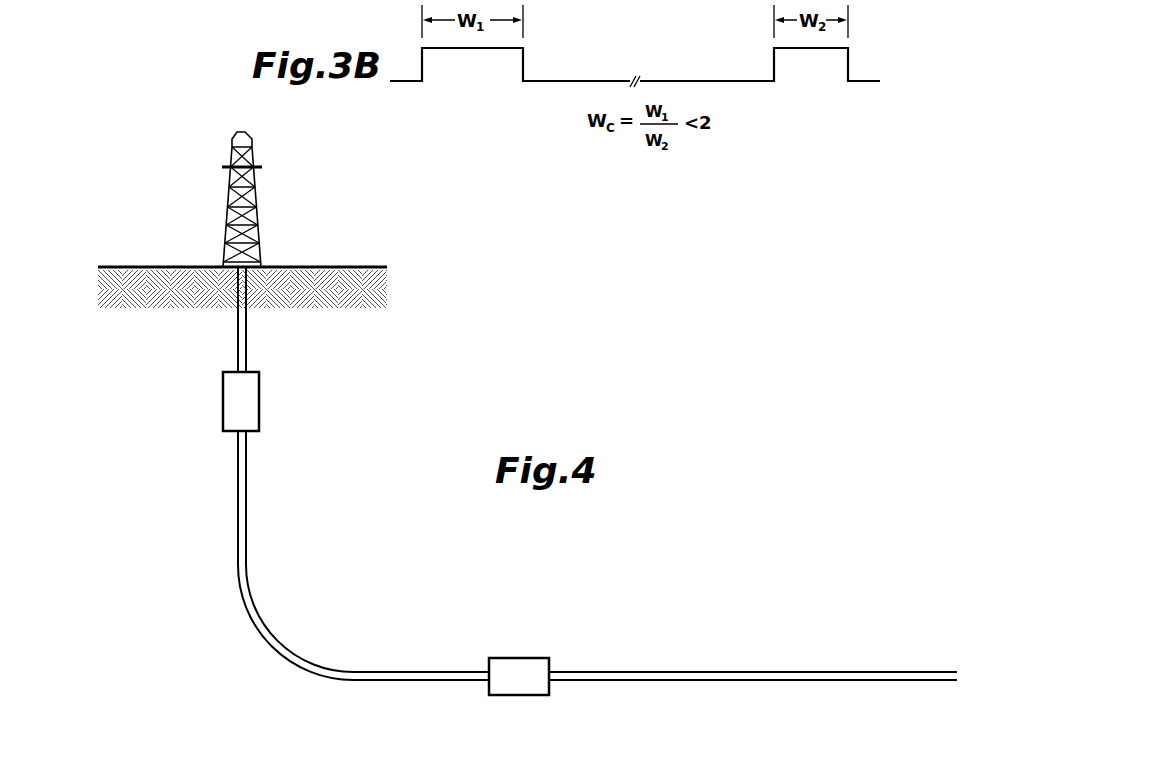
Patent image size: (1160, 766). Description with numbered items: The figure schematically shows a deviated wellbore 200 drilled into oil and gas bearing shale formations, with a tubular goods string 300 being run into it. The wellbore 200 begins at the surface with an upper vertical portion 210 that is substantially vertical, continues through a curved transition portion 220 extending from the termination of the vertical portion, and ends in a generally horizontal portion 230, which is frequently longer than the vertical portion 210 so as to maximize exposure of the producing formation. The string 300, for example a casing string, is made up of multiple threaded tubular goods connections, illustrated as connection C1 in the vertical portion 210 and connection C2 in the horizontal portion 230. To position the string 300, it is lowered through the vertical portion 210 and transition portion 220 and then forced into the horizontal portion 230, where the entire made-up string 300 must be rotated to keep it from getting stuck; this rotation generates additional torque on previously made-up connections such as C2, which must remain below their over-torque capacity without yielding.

The deviated wellbore 200 is at (527, 444).
The upper (vertical) portion 210 is at (190, 277).
The transition portion 220 is at (284, 636).
The horizontal portion 230 is at (338, 720).
The tubular goods string 300 is at (556, 511).
The threaded tubular goods connection C1 is at (259, 400).
The threaded tubular goods connection C2 is at (519, 640).